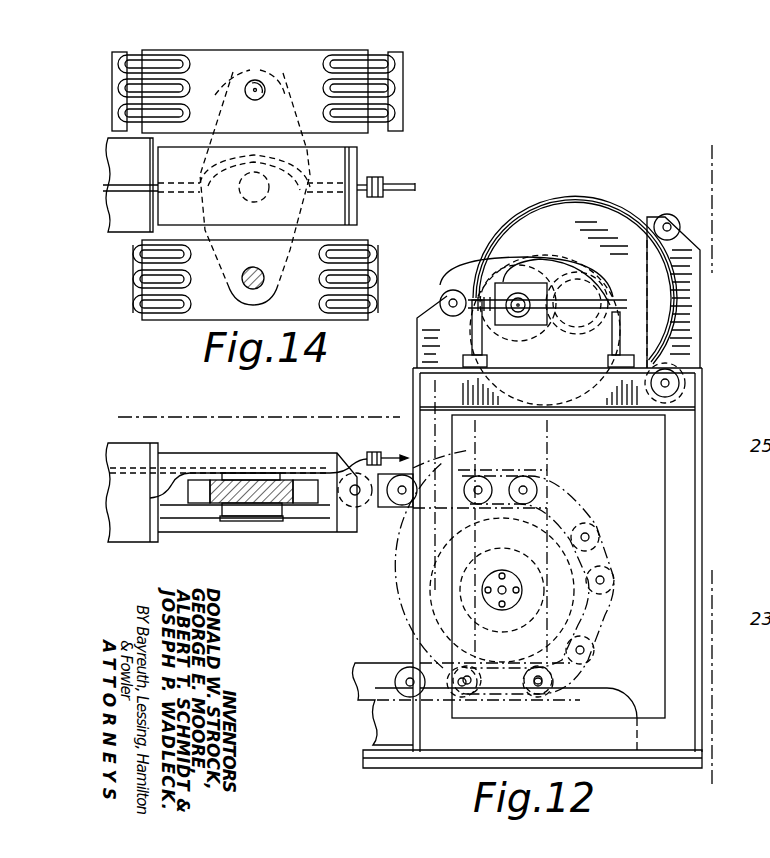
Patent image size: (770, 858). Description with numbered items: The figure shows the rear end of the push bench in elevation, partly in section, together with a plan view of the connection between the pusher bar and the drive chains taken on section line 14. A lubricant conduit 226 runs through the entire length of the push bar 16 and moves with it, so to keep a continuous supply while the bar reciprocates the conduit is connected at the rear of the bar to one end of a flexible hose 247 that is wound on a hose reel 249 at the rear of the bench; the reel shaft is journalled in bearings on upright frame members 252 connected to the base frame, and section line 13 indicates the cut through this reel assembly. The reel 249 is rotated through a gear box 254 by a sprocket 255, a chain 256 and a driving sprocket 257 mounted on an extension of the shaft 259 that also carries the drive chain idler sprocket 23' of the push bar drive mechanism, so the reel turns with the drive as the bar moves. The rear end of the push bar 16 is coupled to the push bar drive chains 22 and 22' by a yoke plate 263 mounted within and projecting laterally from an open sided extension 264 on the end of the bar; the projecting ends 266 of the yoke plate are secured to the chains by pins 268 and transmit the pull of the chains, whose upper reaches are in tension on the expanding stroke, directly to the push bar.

In FIG. 12, the section line 13— 13 is at (712, 150).
In FIG. 14, the section line 14— 14 is at (133, 417).
In FIG. 14, the push bar 16 is at (132, 170).
In FIG. 14, the push bar drive chain 22 is at (281, 185).
In FIG. 12, the push bar drive chain 22' is at (463, 697).
In FIG. 12, the drive chain idler sprocket 23' is at (391, 565).
In FIG. 14, the lubricant conduit 226 is at (173, 476).
In FIG. 14, the flexible hose 247 is at (390, 445).
In FIG. 12, the flexible hose 247 is at (622, 210).
In FIG. 12, the hose reel 249 is at (588, 233).
In FIG. 12, the upright frame member 252 is at (683, 538).
In FIG. 12, the gear box 254 is at (563, 287).
In FIG. 12, the sprocket 255 is at (485, 247).
In FIG. 12, the chain 256 is at (573, 457).
In FIG. 12, the driving sprocket 257 is at (588, 652).
In FIG. 12, the shaft 259 is at (500, 586).
In FIG. 14, the yoke plate 263 is at (303, 151).
In FIG. 14, the open sided extension 264 is at (353, 157).
In FIG. 14, the projecting end of yoke plate 266 is at (225, 105).
In FIG. 14, the pin 268 is at (262, 85).